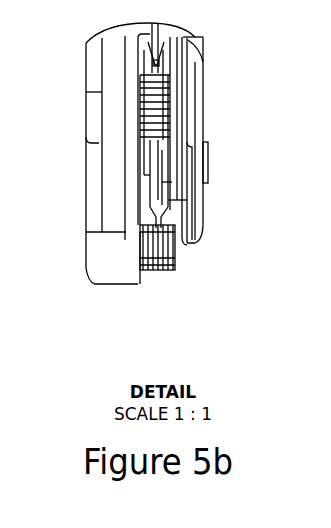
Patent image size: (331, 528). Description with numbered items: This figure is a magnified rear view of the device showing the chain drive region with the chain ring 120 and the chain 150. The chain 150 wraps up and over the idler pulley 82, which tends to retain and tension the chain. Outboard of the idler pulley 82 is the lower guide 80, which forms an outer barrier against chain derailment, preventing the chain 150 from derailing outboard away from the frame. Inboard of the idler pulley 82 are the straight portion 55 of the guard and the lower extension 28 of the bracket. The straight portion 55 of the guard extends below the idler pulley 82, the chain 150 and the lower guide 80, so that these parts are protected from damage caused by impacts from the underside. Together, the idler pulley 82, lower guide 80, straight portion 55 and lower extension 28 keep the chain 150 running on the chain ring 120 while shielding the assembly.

The lower extension 28 is at (110, 214).
The straight portion 55 is at (119, 263).
The lower guide 80 is at (193, 97).
The idler pulley 82 is at (162, 197).
The chain ring 120 is at (162, 268).
The chain 150 is at (143, 132).